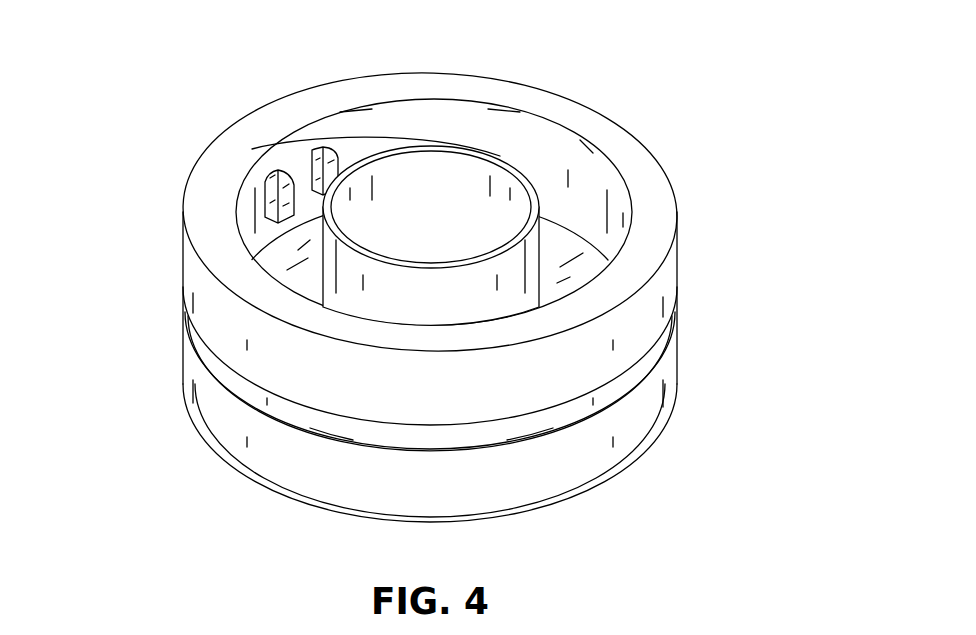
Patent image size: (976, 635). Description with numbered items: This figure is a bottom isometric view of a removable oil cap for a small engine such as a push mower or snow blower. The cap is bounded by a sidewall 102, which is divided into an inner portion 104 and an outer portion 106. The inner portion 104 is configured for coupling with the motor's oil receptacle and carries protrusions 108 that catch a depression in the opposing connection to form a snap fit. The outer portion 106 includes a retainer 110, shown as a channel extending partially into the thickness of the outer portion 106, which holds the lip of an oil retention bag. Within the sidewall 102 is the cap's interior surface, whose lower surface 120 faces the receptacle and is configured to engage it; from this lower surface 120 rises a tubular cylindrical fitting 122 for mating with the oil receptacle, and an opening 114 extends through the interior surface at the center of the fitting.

The sidewall 102 is at (700, 262).
The inner portion 104 is at (546, 158).
The outer portion 106 is at (637, 430).
The protrusions 108 is at (270, 172).
The retainer 110 is at (300, 413).
The opening 114 is at (430, 195).
The lower surface 120 is at (560, 237).
The tubular cylindrical fitting 122 is at (459, 141).